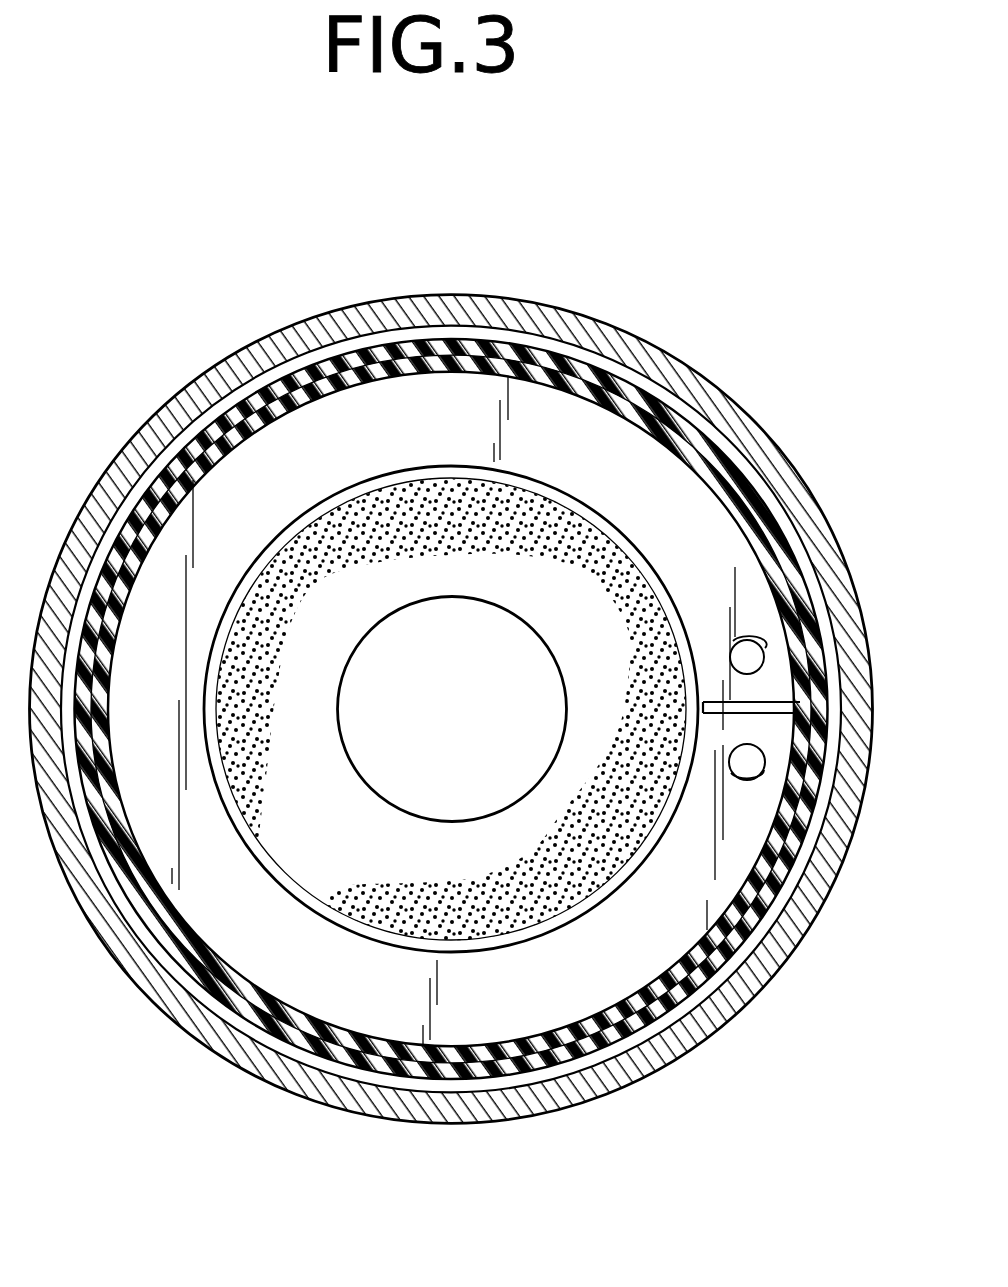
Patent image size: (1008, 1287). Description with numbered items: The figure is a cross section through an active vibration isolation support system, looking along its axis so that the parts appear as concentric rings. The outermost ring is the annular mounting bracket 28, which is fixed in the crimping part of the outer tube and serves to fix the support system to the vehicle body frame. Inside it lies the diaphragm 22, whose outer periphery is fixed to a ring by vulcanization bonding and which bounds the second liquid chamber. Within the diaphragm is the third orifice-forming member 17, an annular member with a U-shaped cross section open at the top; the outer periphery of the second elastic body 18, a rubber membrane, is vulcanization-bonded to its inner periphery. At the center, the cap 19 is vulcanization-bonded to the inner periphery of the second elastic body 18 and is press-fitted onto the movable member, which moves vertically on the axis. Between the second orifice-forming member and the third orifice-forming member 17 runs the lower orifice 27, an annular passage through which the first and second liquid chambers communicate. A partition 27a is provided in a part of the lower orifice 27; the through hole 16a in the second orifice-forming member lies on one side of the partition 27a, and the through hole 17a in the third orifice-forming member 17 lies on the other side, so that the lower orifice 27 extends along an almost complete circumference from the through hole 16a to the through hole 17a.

The mounting bracket 28 is at (675, 368).
The diaphragm 22 is at (276, 398).
The lower orifice 27 is at (420, 445).
The partition 27a is at (700, 716).
The third orifice-forming member 17 is at (450, 483).
The second elastic body 18 is at (350, 844).
The cap 19 is at (472, 734).
The through hole 16a is at (727, 645).
The through hole 17a is at (727, 773).